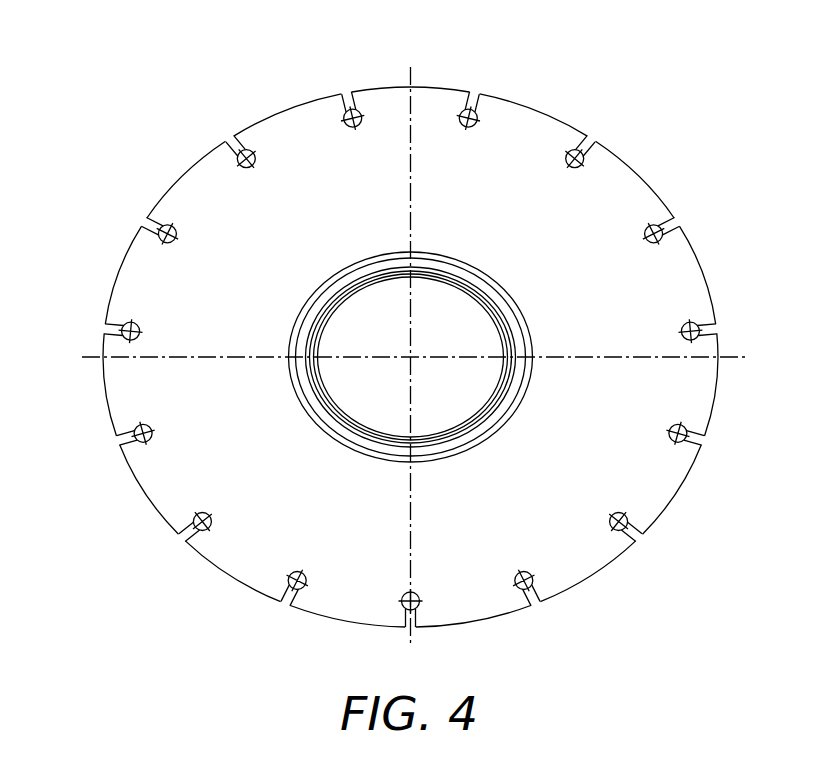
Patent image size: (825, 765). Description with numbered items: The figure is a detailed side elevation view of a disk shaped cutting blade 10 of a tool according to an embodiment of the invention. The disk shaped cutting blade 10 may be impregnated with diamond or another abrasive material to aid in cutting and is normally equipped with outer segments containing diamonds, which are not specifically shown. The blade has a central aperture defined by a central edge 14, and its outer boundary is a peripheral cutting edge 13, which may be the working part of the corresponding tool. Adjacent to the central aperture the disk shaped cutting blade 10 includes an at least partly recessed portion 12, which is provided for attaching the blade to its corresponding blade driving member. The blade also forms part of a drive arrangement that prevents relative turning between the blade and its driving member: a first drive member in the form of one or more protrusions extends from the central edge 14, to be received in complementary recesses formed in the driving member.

The disk shaped cutting blade 10 is at (178, 180).
The peripheral cutting edge 13 is at (702, 265).
The at least partly recessed portion 12 is at (467, 437).
The central edge 14 is at (345, 417).